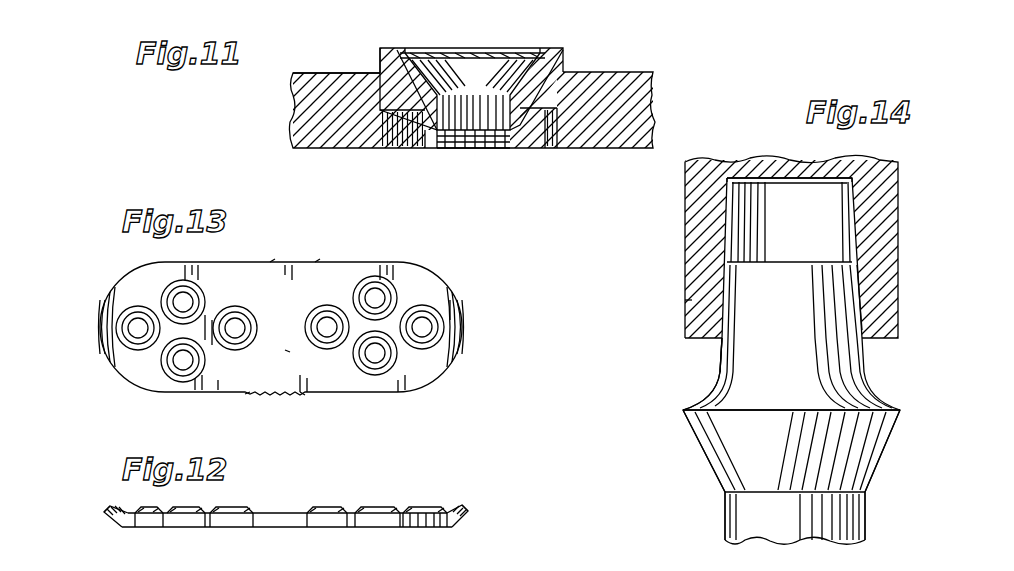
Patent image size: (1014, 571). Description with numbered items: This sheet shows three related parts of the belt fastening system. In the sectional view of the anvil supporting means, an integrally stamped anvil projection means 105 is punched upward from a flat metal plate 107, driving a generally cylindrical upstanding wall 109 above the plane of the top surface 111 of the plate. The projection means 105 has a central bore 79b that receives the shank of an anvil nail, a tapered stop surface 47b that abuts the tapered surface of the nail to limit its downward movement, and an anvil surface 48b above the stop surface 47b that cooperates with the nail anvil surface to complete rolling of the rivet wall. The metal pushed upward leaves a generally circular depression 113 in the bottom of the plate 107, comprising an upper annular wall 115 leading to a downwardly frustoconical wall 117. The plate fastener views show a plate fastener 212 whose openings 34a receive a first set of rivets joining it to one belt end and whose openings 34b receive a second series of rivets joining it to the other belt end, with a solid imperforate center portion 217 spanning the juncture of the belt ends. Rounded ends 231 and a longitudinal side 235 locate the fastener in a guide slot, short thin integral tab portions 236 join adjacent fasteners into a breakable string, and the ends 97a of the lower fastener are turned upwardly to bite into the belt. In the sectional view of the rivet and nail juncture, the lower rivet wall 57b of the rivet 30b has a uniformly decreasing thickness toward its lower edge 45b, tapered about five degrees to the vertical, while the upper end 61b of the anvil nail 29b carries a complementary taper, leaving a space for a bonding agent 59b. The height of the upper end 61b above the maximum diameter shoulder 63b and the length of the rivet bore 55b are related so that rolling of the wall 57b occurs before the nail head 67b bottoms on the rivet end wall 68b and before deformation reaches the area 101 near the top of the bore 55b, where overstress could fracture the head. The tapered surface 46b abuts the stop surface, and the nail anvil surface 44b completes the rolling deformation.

In FIG. 11, the anvil projection means 105 is at (568, 48).
In FIG. 11, the anvil plate 107 is at (640, 92).
In FIG. 11, the upstanding wall 109 is at (380, 60).
In FIG. 11, the top surface 111 is at (345, 72).
In FIG. 11, the circular depression 113 is at (552, 140).
In FIG. 11, the upper annular wall 115 is at (398, 138).
In FIG. 11, the frustoconical wall 117 is at (525, 134).
In FIG. 11, the tapered stop surface 47b is at (430, 88).
In FIG. 11, the anvil surface 48b is at (412, 55).
In FIG. 11, the central bore 79b is at (510, 128).
In FIG. 13, the plate fastener 212 is at (362, 258).
In FIG. 13, the imperforate center portion 217 is at (285, 350).
In FIG. 12, the imperforate center portion 217 is at (310, 527).
In FIG. 13, the rounded ends 231 is at (100, 320).
In FIG. 13, the longitudinal side 235 is at (318, 260).
In FIG. 13, the integral tab portions 236 is at (273, 260).
In FIG. 13, the openings 34a is at (181, 362).
In FIG. 12, the openings 34a is at (132, 510).
In FIG. 13, the openings 34b is at (423, 325).
In FIG. 12, the openings 34b is at (428, 505).
In FIG. 12, the ends 97a is at (108, 516).
In FIG. 14, the rivet 30b is at (724, 158).
In FIG. 14, the area adjacent the top end of the bore 101 is at (872, 182).
In FIG. 14, the rivet bore 55b is at (852, 222).
In FIG. 14, the rivet end wall 68b is at (778, 183).
In FIG. 14, the nail head 67b is at (780, 262).
In FIG. 14, the upper end of the anvil nail 61b is at (791, 361).
In FIG. 14, the bonding agent 59b is at (722, 282).
In FIG. 14, the lower rivet wall 57b is at (700, 304).
In FIG. 14, the lower edge 45b is at (720, 345).
In FIG. 14, the nail anvil surface 44b is at (708, 382).
In FIG. 14, the maximum diameter shoulder 63b is at (686, 410).
In FIG. 14, the tapered surface 46b is at (878, 440).
In FIG. 14, the anvil nail 29b is at (866, 524).